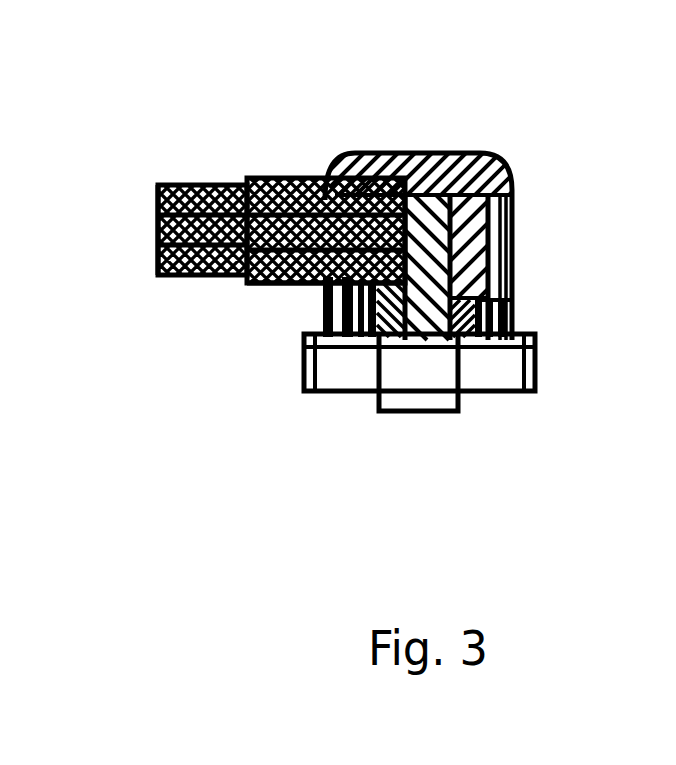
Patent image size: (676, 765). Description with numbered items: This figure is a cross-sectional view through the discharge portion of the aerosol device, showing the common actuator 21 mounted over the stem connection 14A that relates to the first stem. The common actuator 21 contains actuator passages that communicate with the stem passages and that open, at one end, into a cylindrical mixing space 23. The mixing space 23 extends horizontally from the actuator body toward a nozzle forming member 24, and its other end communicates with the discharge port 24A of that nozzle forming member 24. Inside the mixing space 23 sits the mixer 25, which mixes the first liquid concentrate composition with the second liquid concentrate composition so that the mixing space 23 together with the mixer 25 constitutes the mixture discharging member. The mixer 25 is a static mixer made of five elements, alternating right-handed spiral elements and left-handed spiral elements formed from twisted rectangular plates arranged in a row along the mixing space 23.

The stem connection 14A is at (460, 403).
The common actuator 21 is at (519, 188).
The cylindrical mixing space 23 is at (290, 180).
The nozzle forming member 24 is at (210, 182).
The discharge port 24A is at (150, 232).
The mixer 25 is at (277, 285).